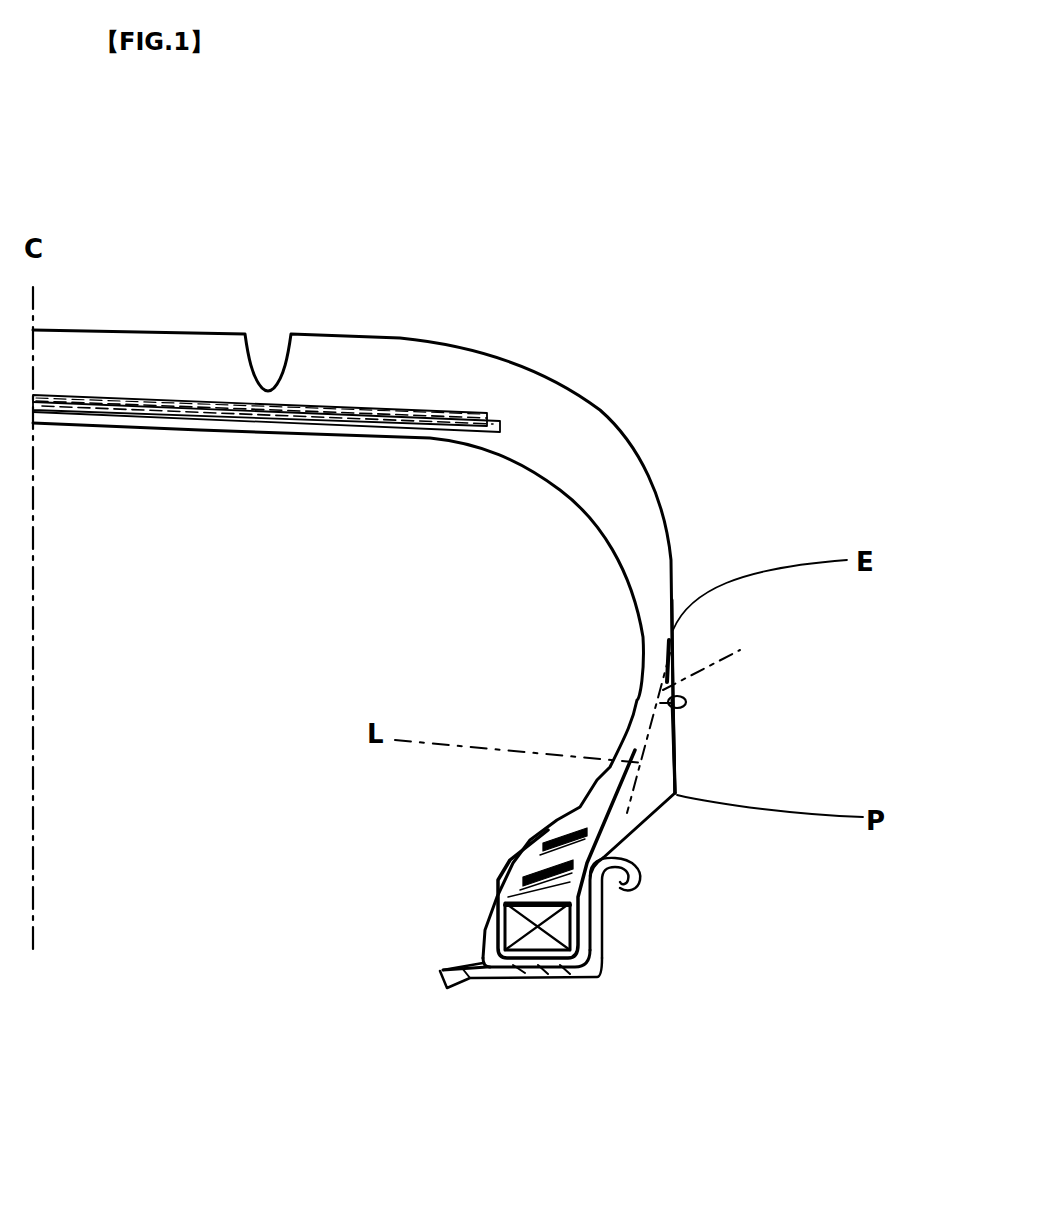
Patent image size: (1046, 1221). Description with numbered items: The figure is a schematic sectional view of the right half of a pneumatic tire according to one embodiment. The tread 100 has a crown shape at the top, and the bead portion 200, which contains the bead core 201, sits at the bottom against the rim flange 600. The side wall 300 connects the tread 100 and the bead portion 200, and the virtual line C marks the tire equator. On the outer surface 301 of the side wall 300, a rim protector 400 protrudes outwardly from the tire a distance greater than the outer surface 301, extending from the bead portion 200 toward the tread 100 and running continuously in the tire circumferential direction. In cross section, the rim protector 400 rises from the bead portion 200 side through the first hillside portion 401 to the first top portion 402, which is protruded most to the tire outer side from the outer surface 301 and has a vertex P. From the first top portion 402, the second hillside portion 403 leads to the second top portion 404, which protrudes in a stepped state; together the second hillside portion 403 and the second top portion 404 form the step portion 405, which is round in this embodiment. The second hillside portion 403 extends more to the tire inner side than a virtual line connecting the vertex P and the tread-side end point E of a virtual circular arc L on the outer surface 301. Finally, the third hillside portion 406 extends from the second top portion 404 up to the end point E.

The tread 100 is at (386, 333).
The bead portion 200 is at (650, 887).
The bead core 201 is at (537, 937).
The side wall 300 is at (680, 533).
The outer surface 301 is at (755, 645).
The rim protector 400 is at (660, 757).
The first hillside portion 401 is at (647, 820).
The first top portion 402 is at (677, 793).
The second hillside portion 403 is at (680, 767).
The second top portion 404 is at (683, 694).
The step portion 405 is at (668, 703).
The third hillside portion 406 is at (673, 664).
The rim flange 600 is at (598, 965).